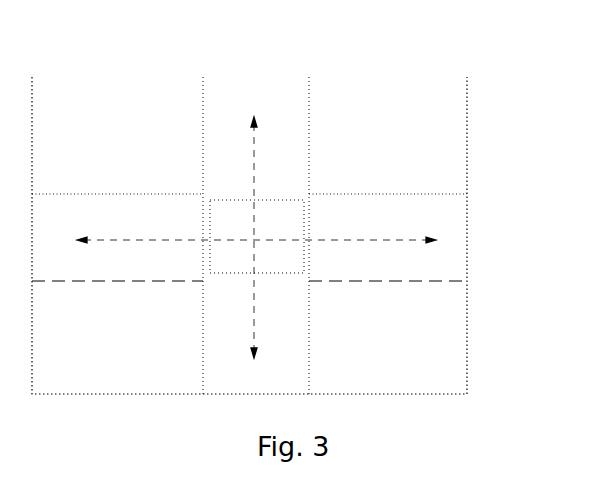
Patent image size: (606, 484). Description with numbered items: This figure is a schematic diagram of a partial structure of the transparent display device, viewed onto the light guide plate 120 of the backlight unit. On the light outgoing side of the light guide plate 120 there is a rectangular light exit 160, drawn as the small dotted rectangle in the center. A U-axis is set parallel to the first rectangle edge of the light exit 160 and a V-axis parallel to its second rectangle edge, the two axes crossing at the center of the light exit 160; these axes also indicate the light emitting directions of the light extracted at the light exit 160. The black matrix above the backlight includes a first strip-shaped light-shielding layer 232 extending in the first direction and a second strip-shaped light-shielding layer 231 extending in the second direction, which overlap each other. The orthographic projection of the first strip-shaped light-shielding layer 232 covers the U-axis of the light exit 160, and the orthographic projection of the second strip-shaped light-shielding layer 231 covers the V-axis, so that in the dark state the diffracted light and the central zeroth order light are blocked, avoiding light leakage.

The light guide plate 120 is at (249, 235).
The light exit 160 is at (210, 214).
The second strip-shaped light-shielding layer 231 is at (275, 95).
The first strip-shaped light-shielding layer 232 is at (444, 220).